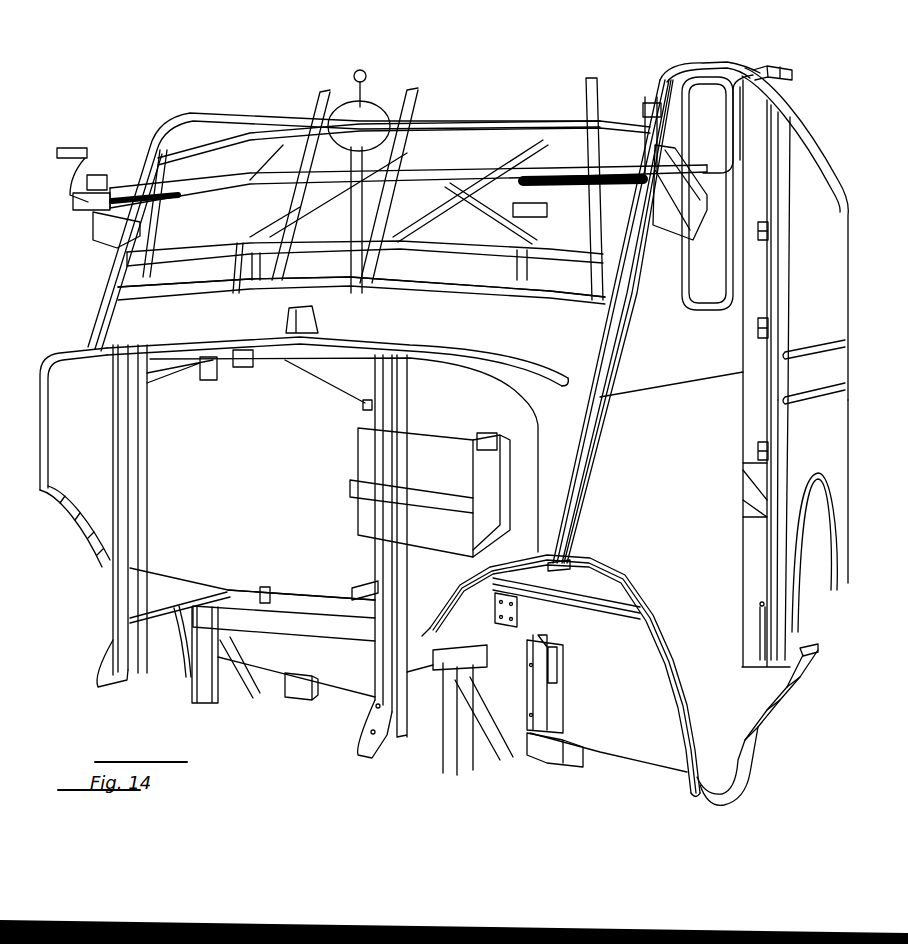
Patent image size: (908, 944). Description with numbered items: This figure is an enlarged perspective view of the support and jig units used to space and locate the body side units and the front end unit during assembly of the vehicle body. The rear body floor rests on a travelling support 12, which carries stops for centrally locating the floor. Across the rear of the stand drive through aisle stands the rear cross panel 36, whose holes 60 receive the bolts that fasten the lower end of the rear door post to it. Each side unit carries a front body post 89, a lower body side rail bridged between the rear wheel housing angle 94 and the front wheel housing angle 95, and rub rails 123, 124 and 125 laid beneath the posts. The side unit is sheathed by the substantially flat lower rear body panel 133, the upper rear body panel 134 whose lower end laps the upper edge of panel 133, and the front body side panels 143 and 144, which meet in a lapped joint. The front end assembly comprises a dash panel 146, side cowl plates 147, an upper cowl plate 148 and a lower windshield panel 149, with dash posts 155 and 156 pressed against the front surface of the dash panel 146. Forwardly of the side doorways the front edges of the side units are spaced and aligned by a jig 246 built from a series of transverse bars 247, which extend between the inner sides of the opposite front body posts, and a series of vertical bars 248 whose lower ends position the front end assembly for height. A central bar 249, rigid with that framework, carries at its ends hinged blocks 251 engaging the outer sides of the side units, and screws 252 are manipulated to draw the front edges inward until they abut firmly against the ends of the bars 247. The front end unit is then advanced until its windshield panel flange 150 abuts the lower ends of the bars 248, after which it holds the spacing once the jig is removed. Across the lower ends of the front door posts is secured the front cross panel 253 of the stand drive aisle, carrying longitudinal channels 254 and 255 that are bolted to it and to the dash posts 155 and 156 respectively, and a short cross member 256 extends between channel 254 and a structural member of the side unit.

The travelling support 12 is at (548, 750).
The rear cross panel of the stand drive through aisle 36 is at (752, 550).
The holes 60 is at (762, 655).
The front body post 89 is at (148, 163).
The rear wheel housing angle 94 is at (828, 543).
The front wheel housing angle 95 is at (655, 612).
The rub rail 123 is at (768, 228).
The rub rail 124 is at (768, 328).
The rub rail 125 is at (753, 450).
The lower rear body panel 133 is at (833, 451).
The upper rear body panel 134 is at (837, 294).
The front body side panel 143 is at (682, 366).
The front body side panel 144 is at (682, 493).
The dash panel 146 is at (283, 490).
The side cowl plates 147 is at (45, 430).
The upper cowl plate 148 is at (477, 370).
The lower windshield panel 149 is at (512, 334).
The windshield panel flange 150 is at (407, 287).
The dash post 155 is at (133, 473).
The dash post 156 is at (380, 567).
The jig 246 is at (504, 111).
The transverse bars 247 is at (450, 255).
The vertical bars 248 is at (322, 113).
The central bar 249 is at (480, 173).
The hinged blocks 251 is at (100, 230).
The screws 252 is at (63, 200).
The front cross panel of the stand drive aisle 253 is at (647, 700).
The longitudinal channel 254 is at (520, 603).
The longitudinal channel 255 is at (157, 605).
The short cross member 256 is at (605, 607).